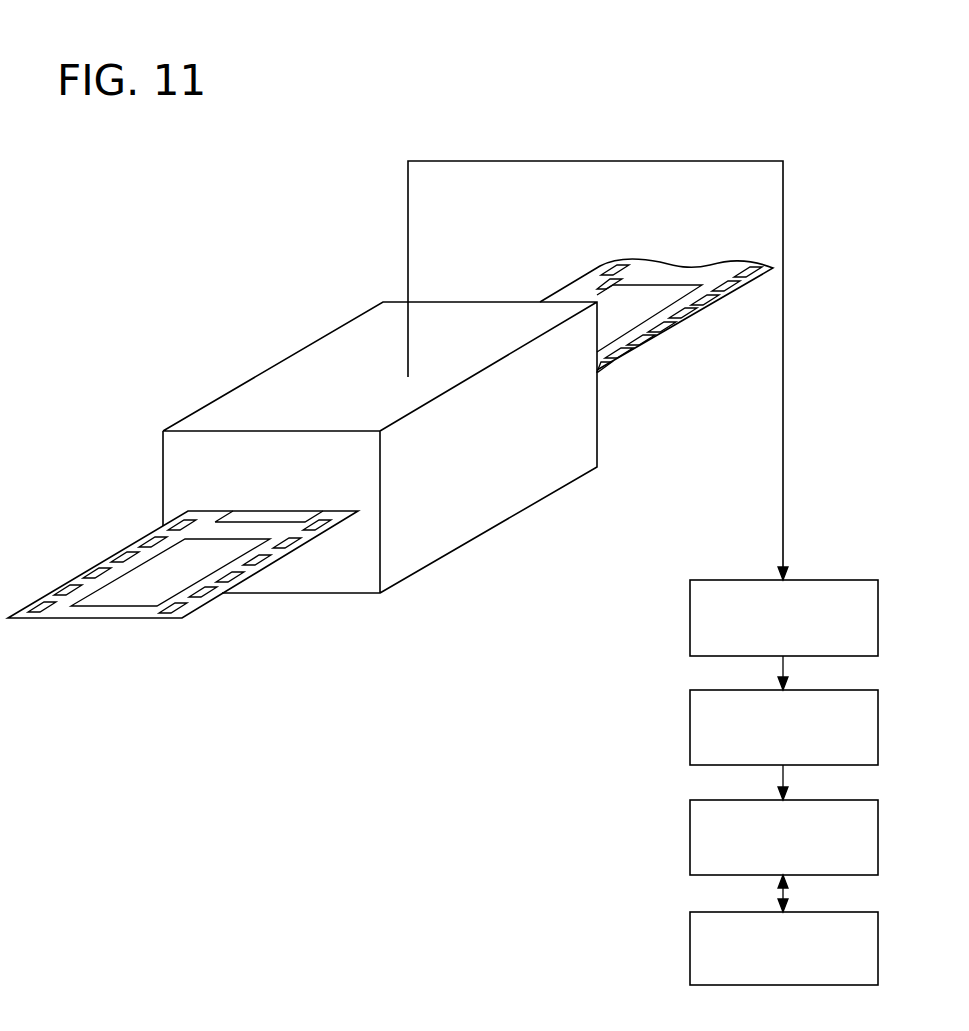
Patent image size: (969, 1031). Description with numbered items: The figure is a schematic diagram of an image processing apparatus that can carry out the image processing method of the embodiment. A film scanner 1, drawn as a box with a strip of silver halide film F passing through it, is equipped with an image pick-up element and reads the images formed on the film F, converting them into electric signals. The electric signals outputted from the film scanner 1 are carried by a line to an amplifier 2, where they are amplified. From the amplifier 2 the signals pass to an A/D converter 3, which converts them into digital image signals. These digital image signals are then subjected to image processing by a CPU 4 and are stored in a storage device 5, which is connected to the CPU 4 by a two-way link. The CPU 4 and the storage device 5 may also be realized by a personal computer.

The film scanner 1 is at (457, 530).
The amplifier 2 is at (690, 617).
The A/D converter 3 is at (690, 727).
The CPU 4 is at (690, 837).
The storage device 5 is at (690, 947).
The photographic film F is at (80, 622).